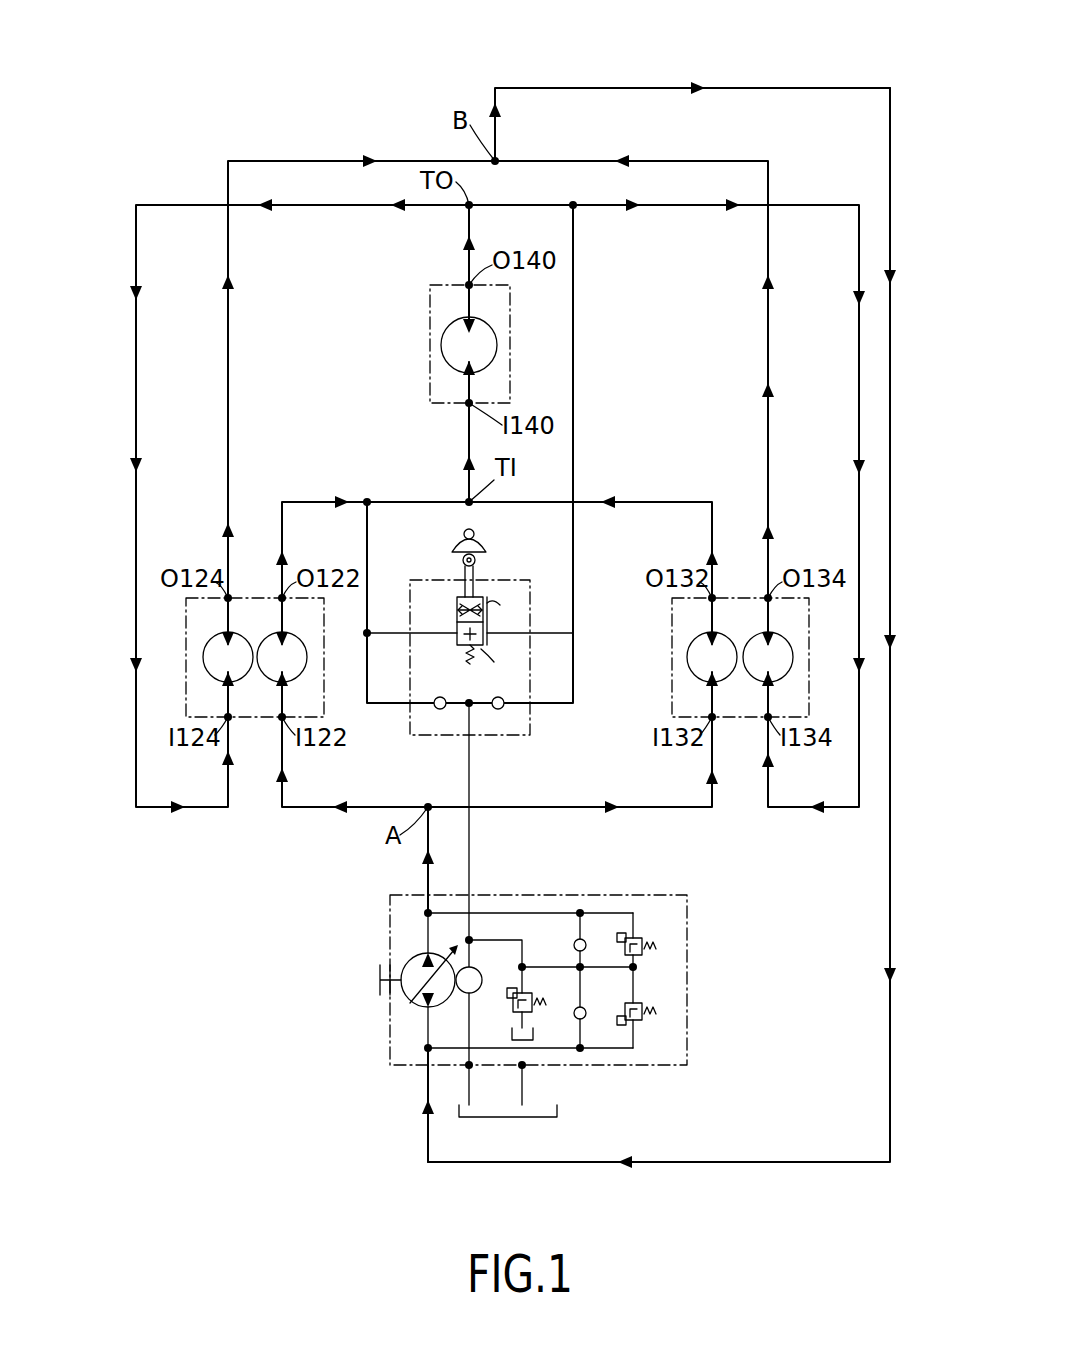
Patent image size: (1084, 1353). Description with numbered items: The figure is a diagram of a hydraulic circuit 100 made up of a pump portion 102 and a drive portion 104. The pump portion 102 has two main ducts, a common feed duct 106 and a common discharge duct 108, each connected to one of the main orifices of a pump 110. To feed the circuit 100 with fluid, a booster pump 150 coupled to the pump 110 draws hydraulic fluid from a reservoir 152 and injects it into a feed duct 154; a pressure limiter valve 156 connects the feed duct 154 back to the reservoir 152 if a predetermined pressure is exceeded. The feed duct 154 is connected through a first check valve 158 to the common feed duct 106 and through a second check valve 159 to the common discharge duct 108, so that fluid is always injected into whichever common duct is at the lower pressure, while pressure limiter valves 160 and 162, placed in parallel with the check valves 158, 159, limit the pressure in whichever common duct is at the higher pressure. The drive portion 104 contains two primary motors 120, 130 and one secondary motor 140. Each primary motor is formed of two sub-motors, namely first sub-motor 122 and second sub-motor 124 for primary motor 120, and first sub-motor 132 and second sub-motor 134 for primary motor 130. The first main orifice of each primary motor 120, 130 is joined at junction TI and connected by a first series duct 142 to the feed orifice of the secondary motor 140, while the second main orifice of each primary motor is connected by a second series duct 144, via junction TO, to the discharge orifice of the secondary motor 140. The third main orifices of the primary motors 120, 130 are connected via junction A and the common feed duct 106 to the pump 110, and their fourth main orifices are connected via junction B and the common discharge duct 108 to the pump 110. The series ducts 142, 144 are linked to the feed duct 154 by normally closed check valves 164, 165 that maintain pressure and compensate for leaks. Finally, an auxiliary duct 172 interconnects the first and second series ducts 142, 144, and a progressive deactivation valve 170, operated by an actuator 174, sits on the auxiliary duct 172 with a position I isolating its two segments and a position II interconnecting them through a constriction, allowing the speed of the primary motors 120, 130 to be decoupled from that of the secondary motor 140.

The circuit 100 is at (300, 70).
The pump portion 102 is at (538, 1017).
The drive portion 104 is at (115, 755).
The common feed duct 106 is at (428, 875).
The common discharge duct 108 is at (762, 1162).
The pump 110 is at (405, 997).
The primary motor 120 is at (224, 644).
The first sub-motor 122 is at (305, 650).
The second sub-motor 124 is at (205, 650).
The primary motor 130 is at (724, 644).
The first sub-motor 132 is at (690, 650).
The second sub-motor 134 is at (792, 650).
The secondary motor 140 is at (422, 338).
The first series duct 142 is at (466, 442).
The second series duct 144 is at (468, 242).
The booster pump 150 is at (480, 968).
The reservoir 152 is at (483, 1118).
The feed duct 154 is at (469, 828).
The pressure limiter valve 156 is at (537, 1008).
The first check valve 158 is at (588, 940).
The second check valve 159 is at (590, 1018).
The pressure limiter valve 160 is at (657, 948).
The pressure limiter valve 162 is at (657, 1012).
The check valve 164 is at (498, 710).
The check valve 165 is at (440, 710).
The progressive deactivation valve 170 is at (471, 647).
The auxiliary duct 172 is at (548, 633).
The actuator 174 is at (489, 542).